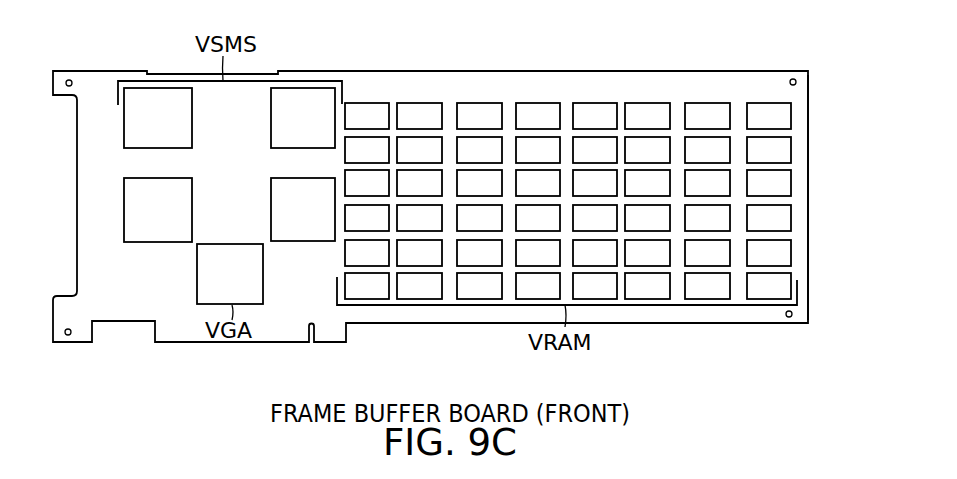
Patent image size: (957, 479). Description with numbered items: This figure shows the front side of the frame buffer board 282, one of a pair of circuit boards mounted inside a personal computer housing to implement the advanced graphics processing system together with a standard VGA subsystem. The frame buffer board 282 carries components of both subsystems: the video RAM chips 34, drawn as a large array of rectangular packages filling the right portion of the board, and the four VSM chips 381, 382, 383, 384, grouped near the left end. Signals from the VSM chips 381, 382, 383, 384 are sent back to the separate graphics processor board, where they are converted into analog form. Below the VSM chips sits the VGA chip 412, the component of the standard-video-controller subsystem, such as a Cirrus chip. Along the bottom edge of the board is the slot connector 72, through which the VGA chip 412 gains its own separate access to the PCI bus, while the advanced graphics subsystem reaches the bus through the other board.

The video RAM chips 34 is at (600, 90).
The frame buffer board 282 is at (809, 110).
The slot connector 72 is at (283, 342).
The VSM chip 381 is at (177, 128).
The VSM chip 382 is at (322, 128).
The VSM chip 383 is at (177, 220).
The VSM chip 384 is at (322, 220).
The VGA chip 412 is at (249, 283).